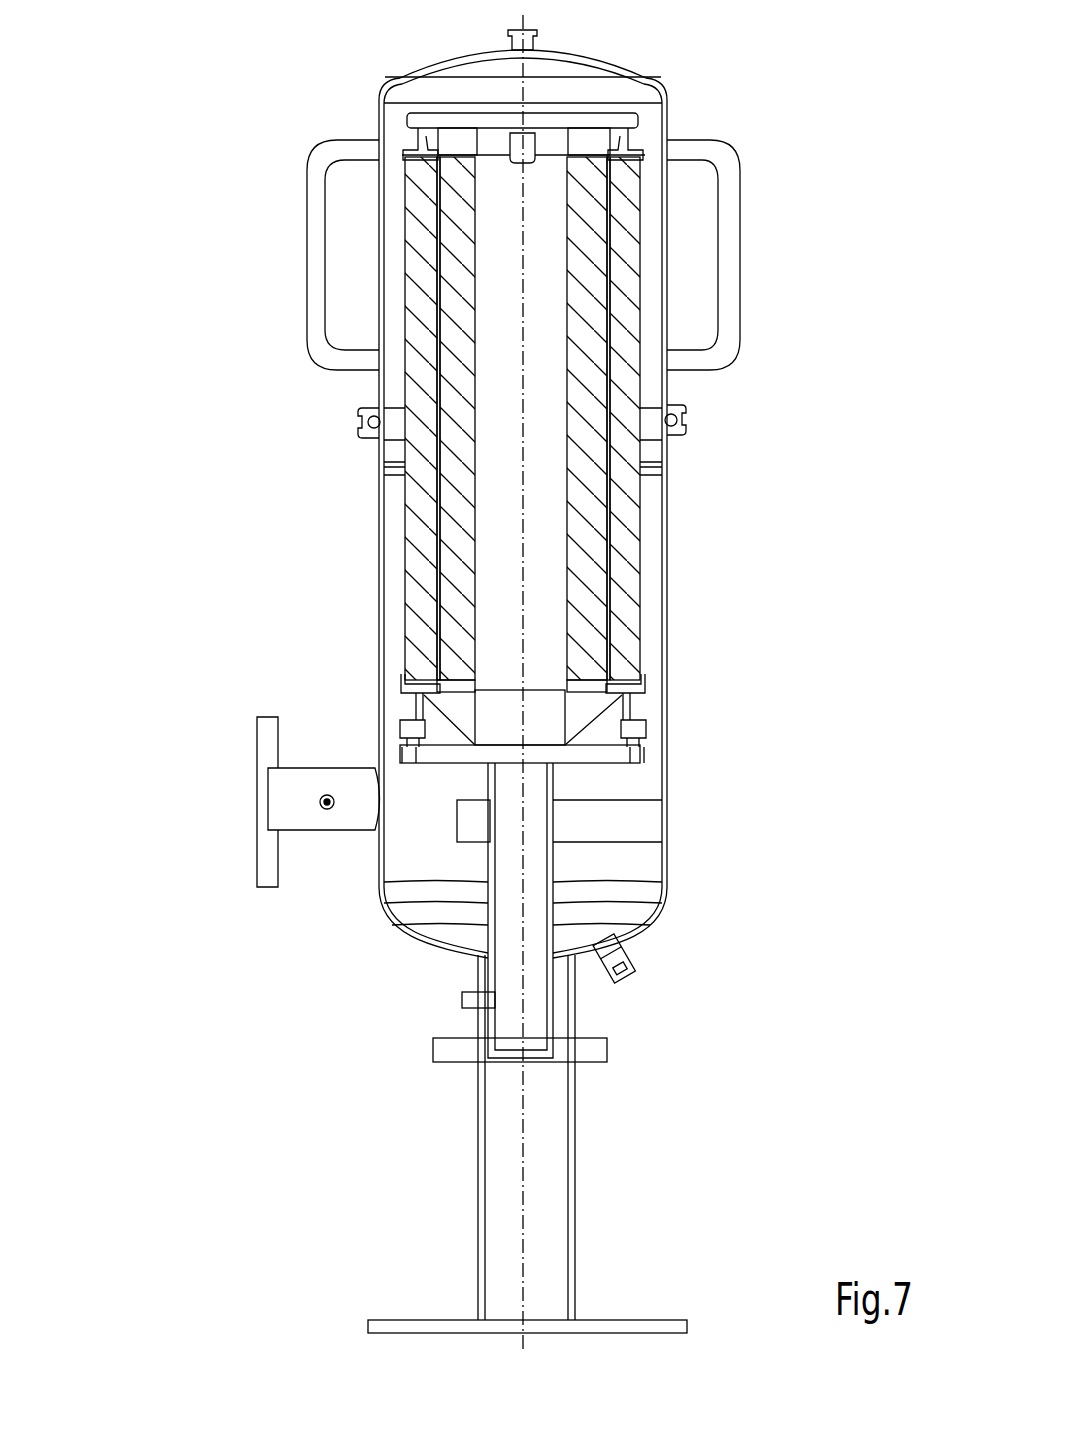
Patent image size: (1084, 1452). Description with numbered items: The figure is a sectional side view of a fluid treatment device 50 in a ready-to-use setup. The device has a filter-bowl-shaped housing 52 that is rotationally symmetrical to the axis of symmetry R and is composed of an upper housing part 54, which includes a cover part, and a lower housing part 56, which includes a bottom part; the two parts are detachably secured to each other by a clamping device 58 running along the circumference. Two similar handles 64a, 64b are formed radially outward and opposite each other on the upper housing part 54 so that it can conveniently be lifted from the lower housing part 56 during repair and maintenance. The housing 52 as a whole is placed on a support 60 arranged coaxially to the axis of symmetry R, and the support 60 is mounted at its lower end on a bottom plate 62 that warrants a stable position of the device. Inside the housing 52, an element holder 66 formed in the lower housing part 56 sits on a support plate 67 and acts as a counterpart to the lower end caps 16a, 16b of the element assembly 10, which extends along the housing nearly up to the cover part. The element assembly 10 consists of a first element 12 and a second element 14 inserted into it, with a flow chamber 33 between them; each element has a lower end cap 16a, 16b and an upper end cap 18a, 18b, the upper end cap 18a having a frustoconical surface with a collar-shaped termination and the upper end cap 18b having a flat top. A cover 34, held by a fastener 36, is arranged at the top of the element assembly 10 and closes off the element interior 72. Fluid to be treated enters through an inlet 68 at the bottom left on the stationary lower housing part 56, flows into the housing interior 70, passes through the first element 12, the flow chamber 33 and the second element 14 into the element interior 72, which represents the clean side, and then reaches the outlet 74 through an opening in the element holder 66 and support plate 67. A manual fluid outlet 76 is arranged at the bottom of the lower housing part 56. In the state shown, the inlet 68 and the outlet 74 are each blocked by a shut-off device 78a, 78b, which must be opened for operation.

The element assembly 10 is at (421, 418).
The first element 12 is at (417, 512).
The second element 14 is at (455, 457).
The lower end cap 16a is at (422, 707).
The lower end cap 16b is at (450, 670).
The upper end cap 18a is at (423, 147).
The upper end cap 18b is at (452, 132).
The flow chamber 33 is at (438, 597).
The cover 34 is at (623, 119).
The fastener 36 is at (535, 158).
The fluid treatment device 50 is at (720, 57).
The housing 52 is at (377, 550).
The upper housing part 54 is at (652, 386).
The lower housing part 56 is at (647, 653).
The clamping device 58 is at (686, 421).
The support 60 is at (540, 1115).
The bottom plate 62 is at (650, 1318).
The handle 64a is at (317, 247).
The handle 64b is at (733, 263).
The element holder 66 is at (548, 720).
The support plate 67 is at (587, 753).
The inlet 68 is at (307, 813).
The housing interior 70 is at (444, 817).
The element interior 72 is at (483, 368).
The outlet 74 is at (533, 1015).
The manual fluid outlet 76 is at (613, 953).
The shut-off device 78a is at (267, 863).
The shut-off device 78b is at (462, 1048).
The axis of symmetry R is at (523, 1340).